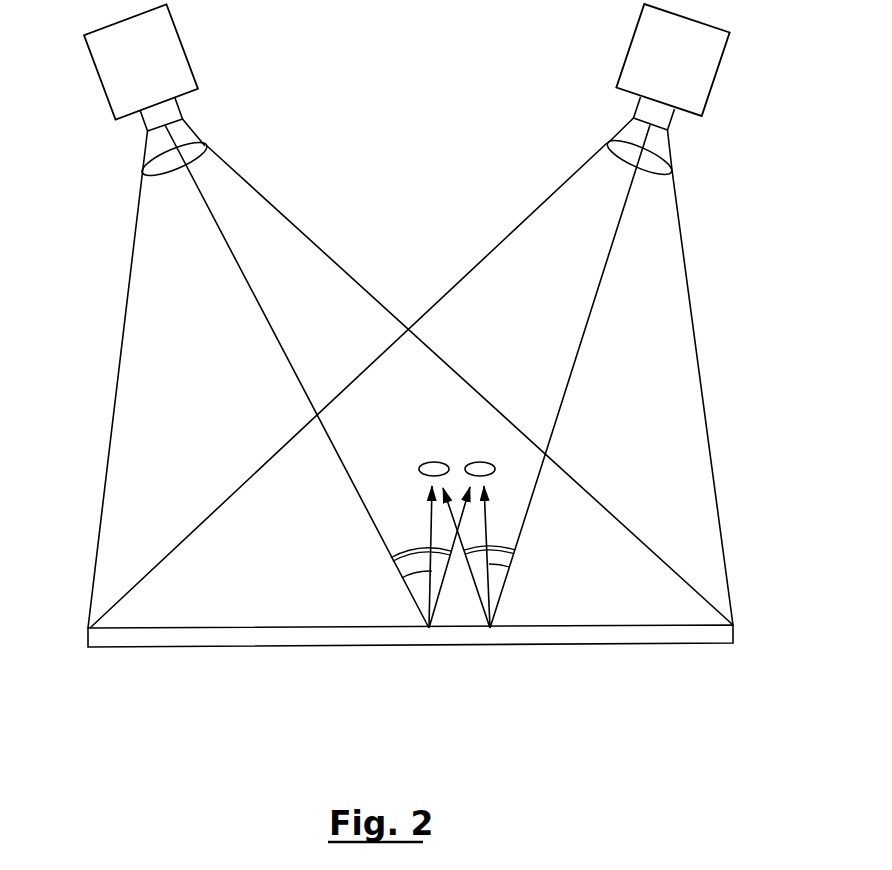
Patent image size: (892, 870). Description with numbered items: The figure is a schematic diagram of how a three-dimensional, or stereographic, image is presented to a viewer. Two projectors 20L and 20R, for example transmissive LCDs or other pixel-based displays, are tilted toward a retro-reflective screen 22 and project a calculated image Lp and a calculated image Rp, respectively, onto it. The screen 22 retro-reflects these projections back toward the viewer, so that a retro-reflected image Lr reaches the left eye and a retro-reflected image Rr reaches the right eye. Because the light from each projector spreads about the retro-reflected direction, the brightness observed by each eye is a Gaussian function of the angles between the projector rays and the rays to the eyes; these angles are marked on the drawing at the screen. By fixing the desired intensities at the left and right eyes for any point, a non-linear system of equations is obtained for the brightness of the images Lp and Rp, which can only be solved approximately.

The left projector 20L is at (206, 105).
The right projector 20R is at (614, 94).
The retro-reflective screen 22 is at (132, 658).
The calculated image Lp is at (203, 148).
The calculated image Rp is at (623, 150).
The retro-reflected image Lr is at (433, 456).
The retro-reflected image Rr is at (482, 456).